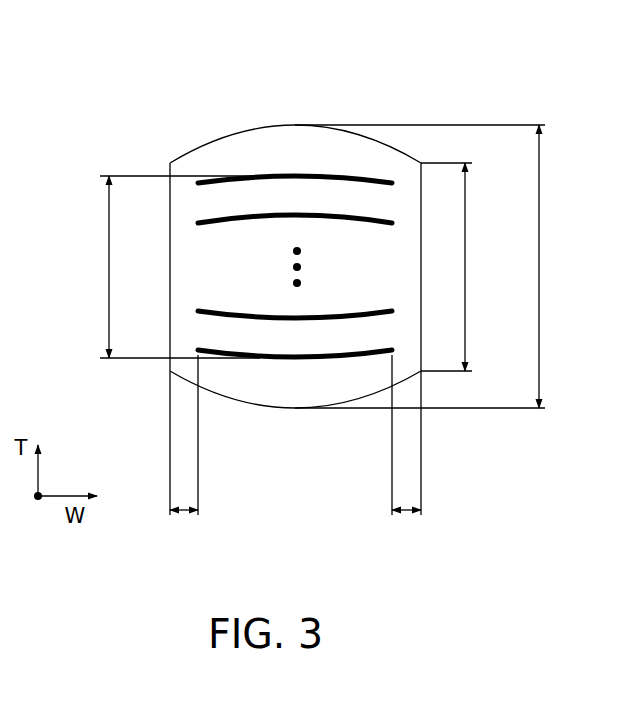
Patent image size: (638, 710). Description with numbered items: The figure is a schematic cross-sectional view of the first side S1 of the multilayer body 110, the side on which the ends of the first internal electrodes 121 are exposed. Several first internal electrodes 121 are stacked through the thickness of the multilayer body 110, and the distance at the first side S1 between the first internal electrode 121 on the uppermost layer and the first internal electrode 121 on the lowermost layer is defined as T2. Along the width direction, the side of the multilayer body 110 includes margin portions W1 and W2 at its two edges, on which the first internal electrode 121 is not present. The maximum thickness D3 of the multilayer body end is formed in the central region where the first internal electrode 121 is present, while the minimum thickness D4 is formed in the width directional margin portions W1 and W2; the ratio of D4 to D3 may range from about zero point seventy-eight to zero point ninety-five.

The multilayer body 110 is at (306, 125).
The first internal electrode 121 is at (268, 177).
The distance between uppermost and lowermost first internal electrodes T2 is at (204, 267).
The minimum thickness of the multilayer body end D4 is at (459, 267).
The maximum thickness of the multilayer body end D3 is at (436, 266).
The width directional margin portion W1 is at (183, 450).
The width directional margin portion W2 is at (406, 450).
The first side of the multilayer body S1 is at (310, 590).